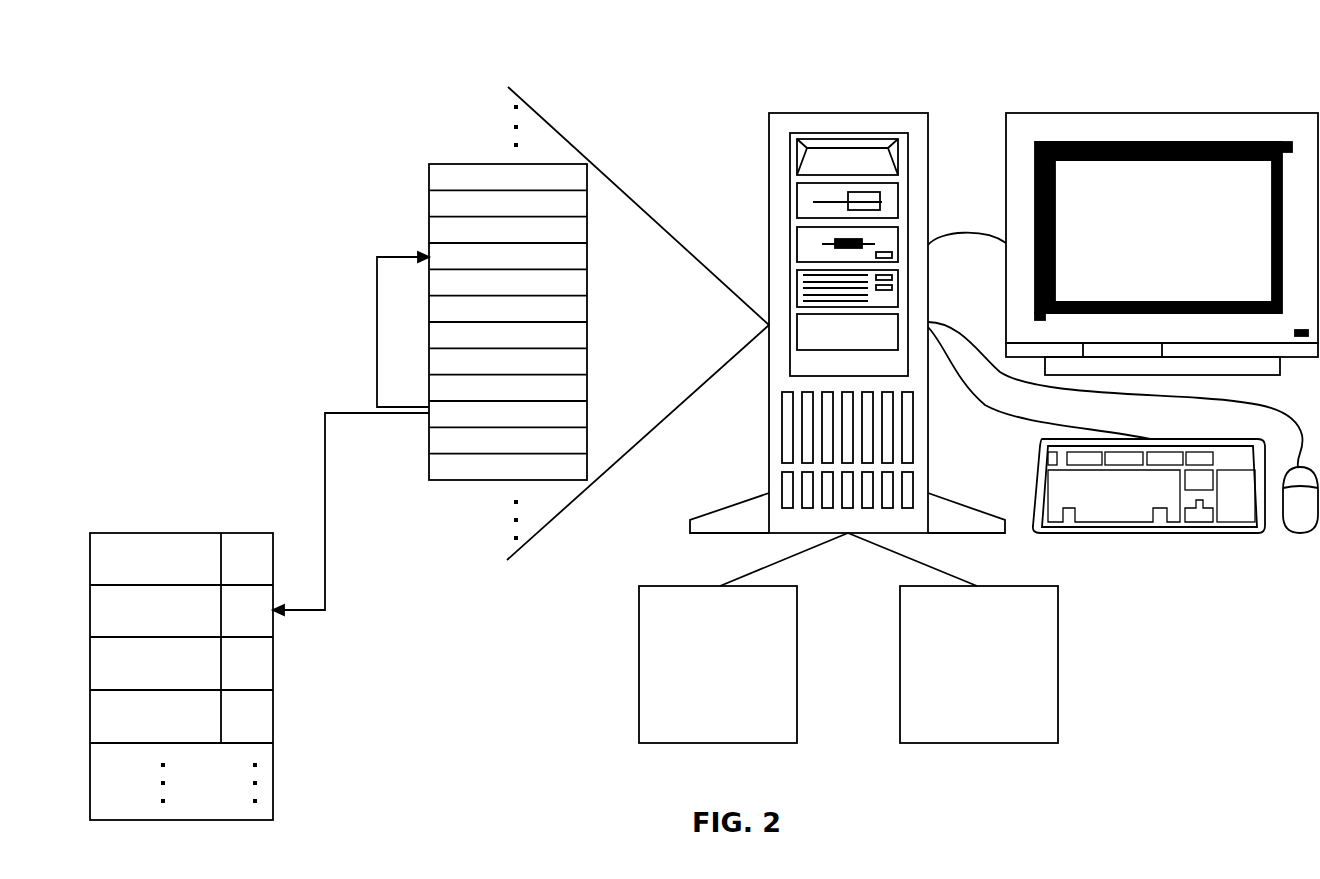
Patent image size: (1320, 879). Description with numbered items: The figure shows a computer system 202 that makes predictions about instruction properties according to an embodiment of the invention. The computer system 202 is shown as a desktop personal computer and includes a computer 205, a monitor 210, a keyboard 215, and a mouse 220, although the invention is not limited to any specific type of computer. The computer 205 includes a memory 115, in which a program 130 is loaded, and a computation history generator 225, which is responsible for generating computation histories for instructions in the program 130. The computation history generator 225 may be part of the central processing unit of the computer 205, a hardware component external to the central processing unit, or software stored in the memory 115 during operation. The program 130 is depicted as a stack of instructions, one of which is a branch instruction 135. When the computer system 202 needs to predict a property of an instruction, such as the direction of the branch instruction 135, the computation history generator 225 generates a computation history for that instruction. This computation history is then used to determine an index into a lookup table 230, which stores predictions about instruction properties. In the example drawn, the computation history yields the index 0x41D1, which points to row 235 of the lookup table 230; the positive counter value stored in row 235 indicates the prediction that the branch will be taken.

The computer system 202 is at (678, 52).
The program 130 is at (418, 102).
The branch instruction 135 is at (429, 424).
The computer 205 is at (812, 113).
The monitor 210 is at (1048, 113).
The keyboard 215 is at (1072, 533).
The mouse 220 is at (1300, 533).
The memory 115 is at (680, 586).
The computation history generator 225 is at (1015, 743).
The lookup table 230 is at (135, 533).
The row 235 is at (80, 610).